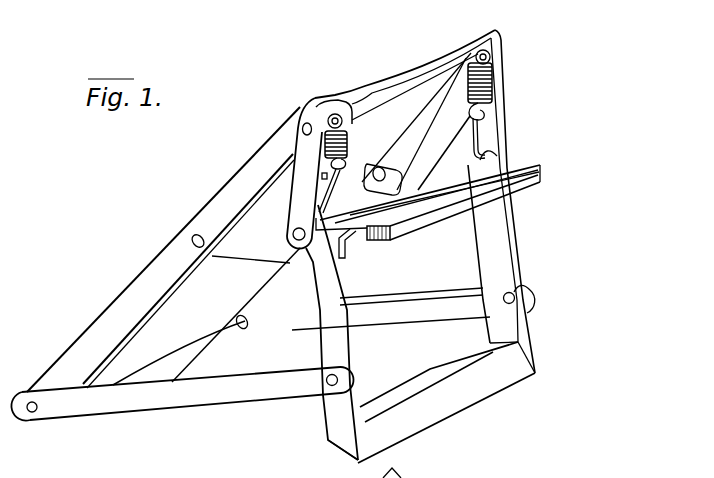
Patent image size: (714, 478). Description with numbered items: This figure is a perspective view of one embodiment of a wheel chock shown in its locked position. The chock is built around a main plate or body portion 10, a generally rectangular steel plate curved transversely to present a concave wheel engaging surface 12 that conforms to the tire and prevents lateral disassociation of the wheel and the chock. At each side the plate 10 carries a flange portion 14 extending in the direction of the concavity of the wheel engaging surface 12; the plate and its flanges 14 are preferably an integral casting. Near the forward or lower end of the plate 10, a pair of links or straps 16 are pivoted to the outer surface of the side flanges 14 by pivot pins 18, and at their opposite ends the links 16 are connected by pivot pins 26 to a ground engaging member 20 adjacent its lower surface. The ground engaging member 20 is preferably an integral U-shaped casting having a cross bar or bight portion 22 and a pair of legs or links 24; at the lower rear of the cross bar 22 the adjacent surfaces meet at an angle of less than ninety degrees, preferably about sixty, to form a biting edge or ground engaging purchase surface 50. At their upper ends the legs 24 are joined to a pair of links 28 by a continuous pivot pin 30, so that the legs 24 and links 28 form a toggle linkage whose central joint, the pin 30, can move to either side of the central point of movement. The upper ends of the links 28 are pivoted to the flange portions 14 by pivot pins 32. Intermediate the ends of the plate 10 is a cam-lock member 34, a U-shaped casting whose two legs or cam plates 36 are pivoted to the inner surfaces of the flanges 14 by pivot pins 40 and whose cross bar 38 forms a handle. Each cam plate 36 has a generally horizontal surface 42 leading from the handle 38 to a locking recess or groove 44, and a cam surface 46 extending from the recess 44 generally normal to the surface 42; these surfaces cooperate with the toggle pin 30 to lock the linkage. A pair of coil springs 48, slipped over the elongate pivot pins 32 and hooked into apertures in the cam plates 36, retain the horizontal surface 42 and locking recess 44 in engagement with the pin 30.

The main plate or body portion 10 is at (200, 293).
The wheel engaging surface 12 is at (393, 84).
The flange portion 14 is at (98, 335).
The links or straps 16 is at (166, 402).
The pivot pins 18 is at (32, 412).
The ground engaging member 20 is at (532, 342).
The cross bar or bight portion 22 is at (477, 397).
The legs or links 24 is at (340, 345).
The pivot pins 26 is at (330, 385).
The links 28 is at (298, 160).
The pivot pin 30 is at (407, 190).
The pivot pins 32 is at (299, 124).
The cam-lock member 34 is at (541, 182).
The legs or cam plates 36 is at (437, 163).
The cross bar or handle 38 is at (440, 202).
The pivot pins 40 is at (192, 236).
The horizontal surface 42 is at (370, 241).
The locking recess or groove 44 is at (502, 163).
The cam surface 46 is at (290, 219).
The coil springs 48 is at (350, 105).
The biting edge or ground engaging purchase surface 50 is at (356, 461).